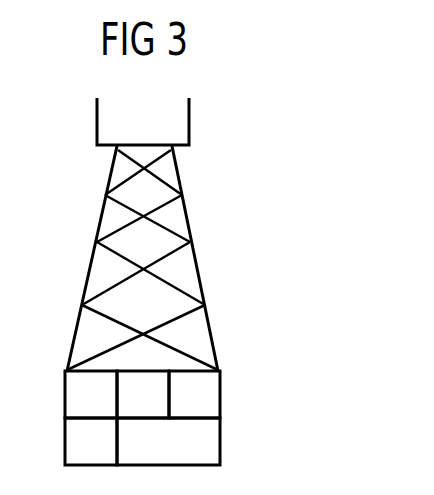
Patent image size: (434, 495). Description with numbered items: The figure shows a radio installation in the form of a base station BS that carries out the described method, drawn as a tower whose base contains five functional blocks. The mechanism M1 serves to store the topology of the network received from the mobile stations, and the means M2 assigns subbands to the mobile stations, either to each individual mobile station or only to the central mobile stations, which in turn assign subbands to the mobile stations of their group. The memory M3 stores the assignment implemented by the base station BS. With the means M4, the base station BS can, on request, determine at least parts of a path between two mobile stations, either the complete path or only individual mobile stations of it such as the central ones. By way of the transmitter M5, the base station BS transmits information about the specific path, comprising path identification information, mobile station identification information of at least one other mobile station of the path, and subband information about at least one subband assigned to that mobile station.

The base station BS is at (163, 234).
The mechanism M1 is at (91, 395).
The means M2 is at (143, 395).
The memory M3 is at (194, 395).
The means M4 is at (91, 441).
The transmitter M5 is at (168, 441).